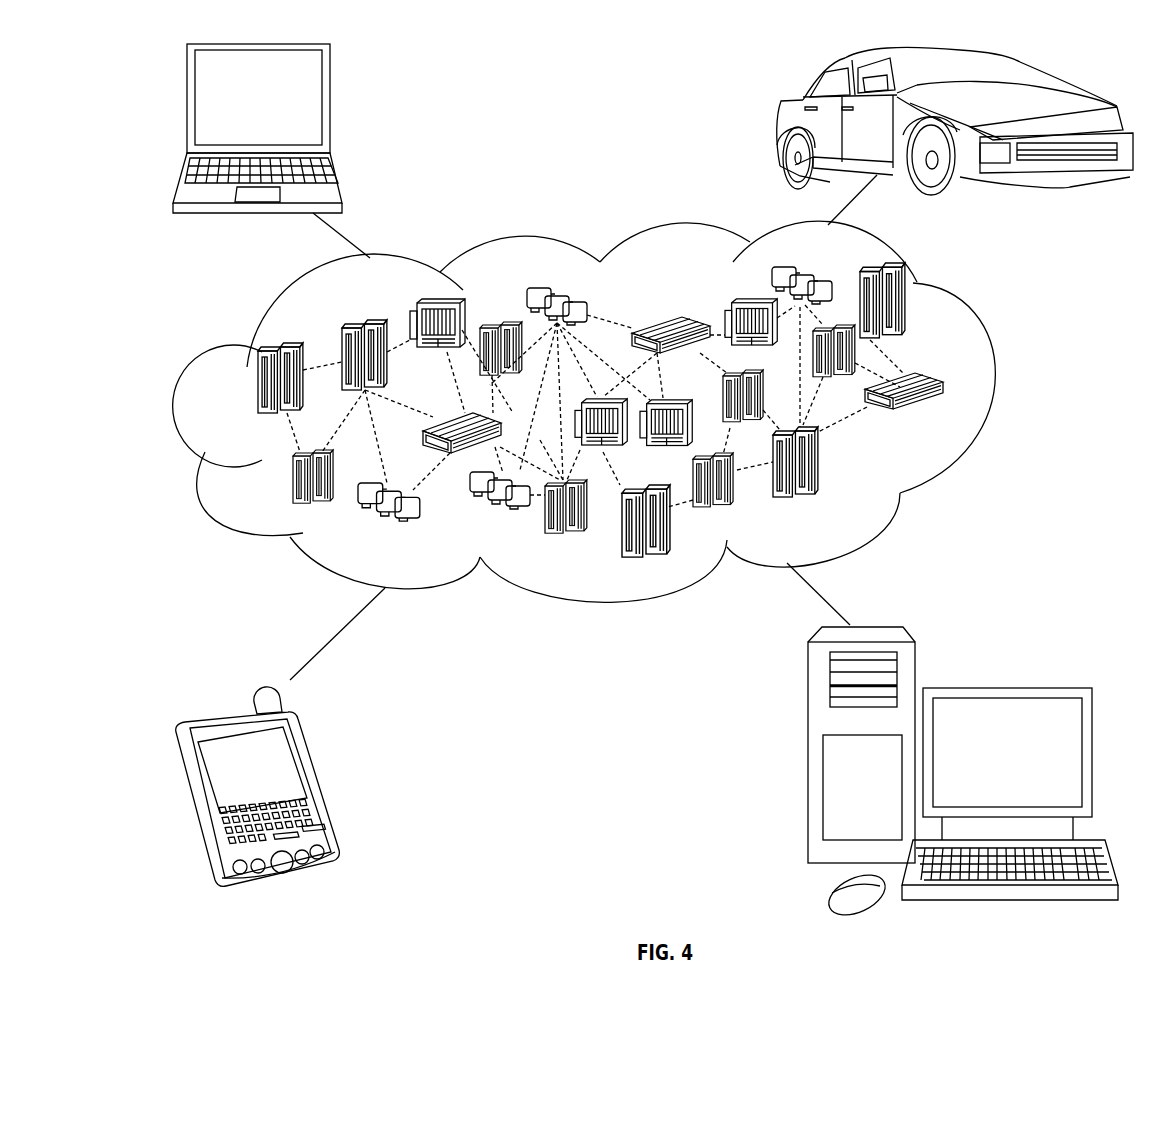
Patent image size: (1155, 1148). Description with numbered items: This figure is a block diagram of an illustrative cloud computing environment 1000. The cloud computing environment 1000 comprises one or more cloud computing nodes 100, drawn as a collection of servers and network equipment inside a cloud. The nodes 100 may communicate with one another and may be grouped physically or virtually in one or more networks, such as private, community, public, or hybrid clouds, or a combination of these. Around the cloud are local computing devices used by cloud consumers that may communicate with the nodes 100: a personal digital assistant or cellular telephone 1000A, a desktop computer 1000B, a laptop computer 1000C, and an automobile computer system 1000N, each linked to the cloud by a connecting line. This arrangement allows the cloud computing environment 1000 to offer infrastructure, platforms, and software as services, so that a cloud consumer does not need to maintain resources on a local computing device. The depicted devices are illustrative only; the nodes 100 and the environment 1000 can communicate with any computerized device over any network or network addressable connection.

The cloud computing environment 1000 is at (1007, 390).
The cloud computing nodes 100 is at (945, 419).
The personal digital assistant (PDA) or cellular telephone 1000A is at (317, 781).
The desktop computer 1000B is at (1005, 688).
The laptop computer 1000C is at (331, 109).
The automobile computer system 1000N is at (778, 124).